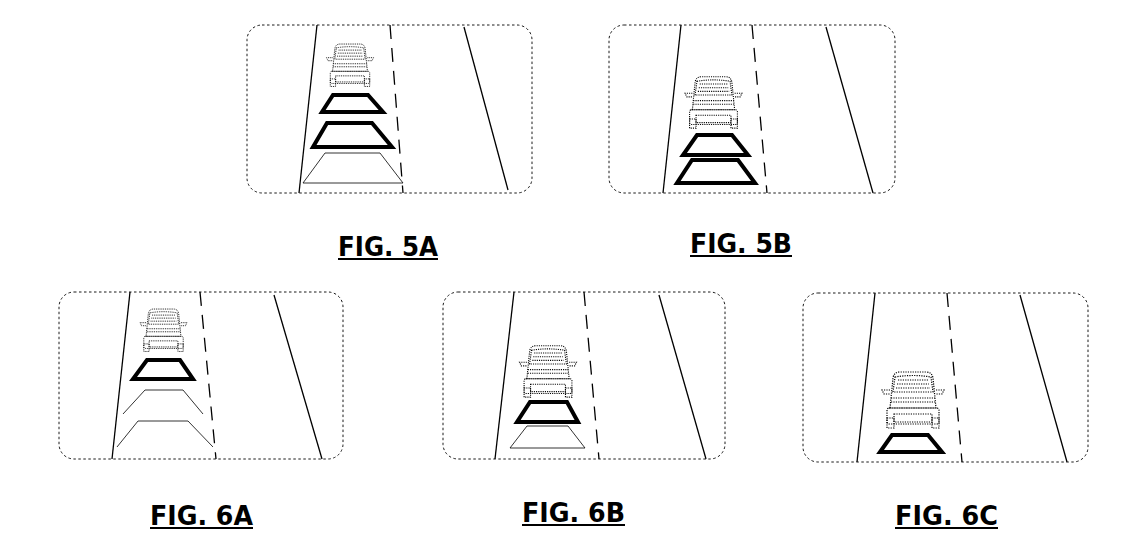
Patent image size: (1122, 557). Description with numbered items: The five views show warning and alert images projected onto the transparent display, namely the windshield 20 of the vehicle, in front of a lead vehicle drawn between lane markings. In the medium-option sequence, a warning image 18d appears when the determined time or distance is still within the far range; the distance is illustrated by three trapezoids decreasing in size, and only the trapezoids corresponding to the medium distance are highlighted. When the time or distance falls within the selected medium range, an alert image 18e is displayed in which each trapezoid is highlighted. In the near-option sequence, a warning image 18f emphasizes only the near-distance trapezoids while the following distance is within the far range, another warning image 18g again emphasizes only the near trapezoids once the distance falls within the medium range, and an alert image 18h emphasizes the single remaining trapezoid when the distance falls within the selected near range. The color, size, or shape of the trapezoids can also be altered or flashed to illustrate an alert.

In FIG. 5A, the windshield 20 is at (528, 32).
In FIG. 5B, the windshield 20 is at (895, 38).
In FIG. 6A, the windshield 20 is at (343, 313).
In FIG. 6B, the windshield 20 is at (727, 307).
In FIG. 6C, the windshield 20 is at (1053, 292).
In FIG. 5A, the warning image 18d is at (296, 148).
In FIG. 5B, the alert image 18e is at (655, 162).
In FIG. 6A, the warning image 18f is at (102, 433).
In FIG. 6B, the warning image 18g is at (483, 423).
In FIG. 6C, the alert image 18h is at (850, 441).